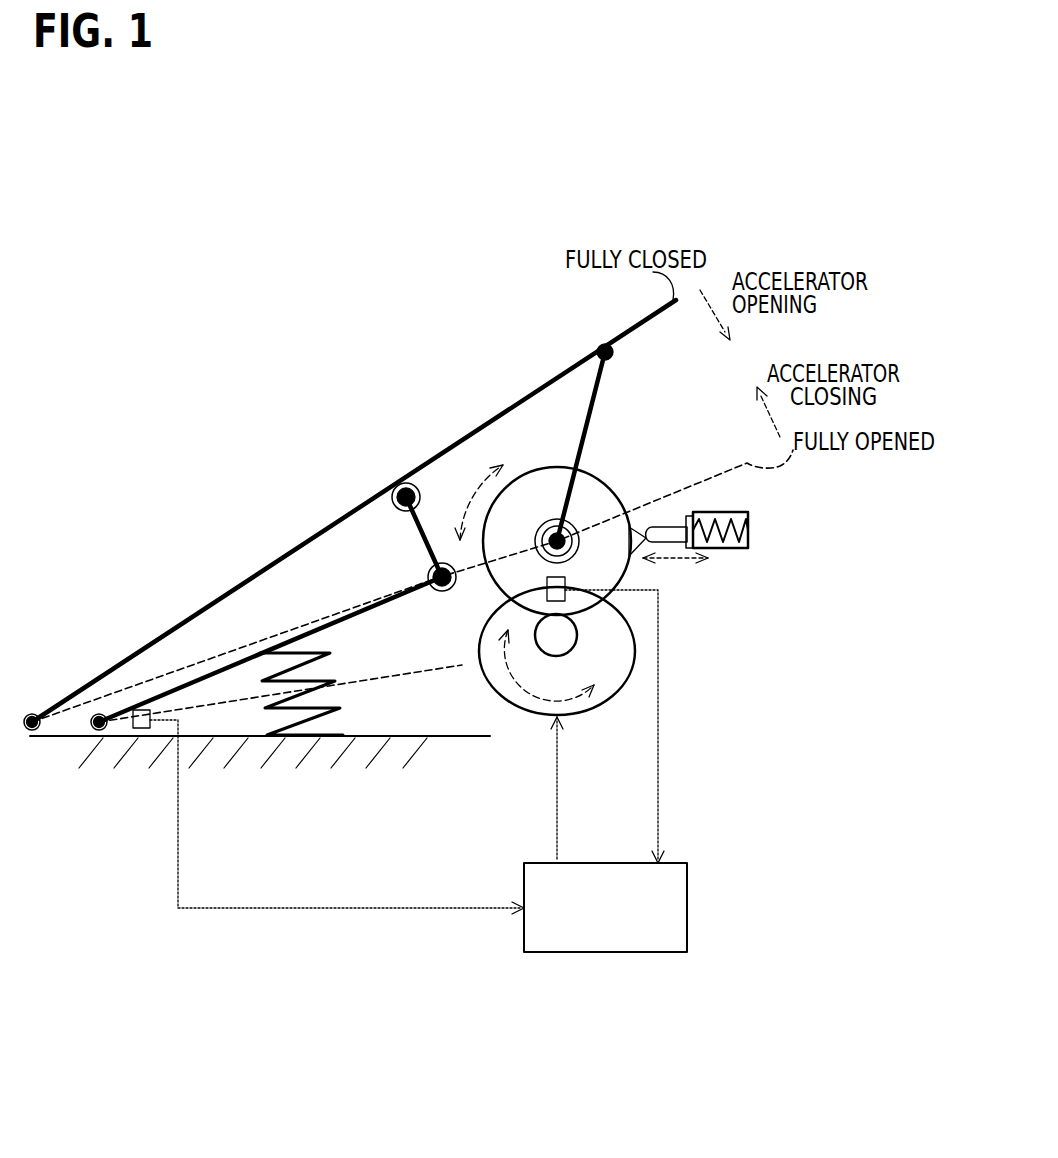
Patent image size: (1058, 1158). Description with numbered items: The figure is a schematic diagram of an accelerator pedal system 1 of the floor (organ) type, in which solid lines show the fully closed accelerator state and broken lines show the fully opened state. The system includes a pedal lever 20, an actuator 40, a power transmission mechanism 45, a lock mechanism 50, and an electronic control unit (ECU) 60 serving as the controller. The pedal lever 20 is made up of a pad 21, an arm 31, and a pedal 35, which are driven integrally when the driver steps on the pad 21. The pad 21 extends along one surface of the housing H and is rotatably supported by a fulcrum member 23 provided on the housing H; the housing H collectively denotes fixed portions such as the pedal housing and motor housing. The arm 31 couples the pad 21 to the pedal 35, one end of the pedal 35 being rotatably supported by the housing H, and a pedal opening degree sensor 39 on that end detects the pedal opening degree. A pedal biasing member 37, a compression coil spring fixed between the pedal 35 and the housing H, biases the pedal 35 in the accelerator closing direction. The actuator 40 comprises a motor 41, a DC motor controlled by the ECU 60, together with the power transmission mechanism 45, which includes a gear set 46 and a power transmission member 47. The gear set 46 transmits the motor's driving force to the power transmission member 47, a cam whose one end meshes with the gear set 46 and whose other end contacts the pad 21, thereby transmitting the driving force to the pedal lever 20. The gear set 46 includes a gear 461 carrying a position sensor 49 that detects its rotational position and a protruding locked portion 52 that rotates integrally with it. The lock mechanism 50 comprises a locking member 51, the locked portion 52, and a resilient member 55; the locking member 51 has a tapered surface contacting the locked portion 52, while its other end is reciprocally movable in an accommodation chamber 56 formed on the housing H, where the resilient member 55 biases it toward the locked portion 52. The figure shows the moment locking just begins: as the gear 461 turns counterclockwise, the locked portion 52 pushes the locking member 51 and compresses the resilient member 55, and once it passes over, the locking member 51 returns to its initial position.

The accelerator pedal system 1 is at (98, 903).
The pedal lever 20 is at (345, 564).
The pad 21 is at (272, 562).
The fulcrum member 23 is at (32, 713).
The arm 31 is at (420, 533).
The pedal 35 is at (207, 673).
The pedal biasing member 37 is at (328, 712).
The pedal opening degree sensor 39 is at (143, 730).
The actuator 40 is at (557, 693).
The motor 41 is at (523, 699).
The power transmission mechanism 45 is at (608, 410).
The gear set 46 is at (533, 463).
The gear 461 is at (552, 490).
The power transmission member 47 is at (590, 410).
The position sensor 49 is at (547, 592).
The lock mechanism 50 is at (735, 526).
The locking member 51 is at (672, 528).
The locked portion 52 is at (632, 520).
The resilient member 55 is at (715, 512).
The accommodation chamber 56 is at (733, 548).
The electronic control unit (ECU) 60 is at (688, 886).
The housing H is at (449, 739).